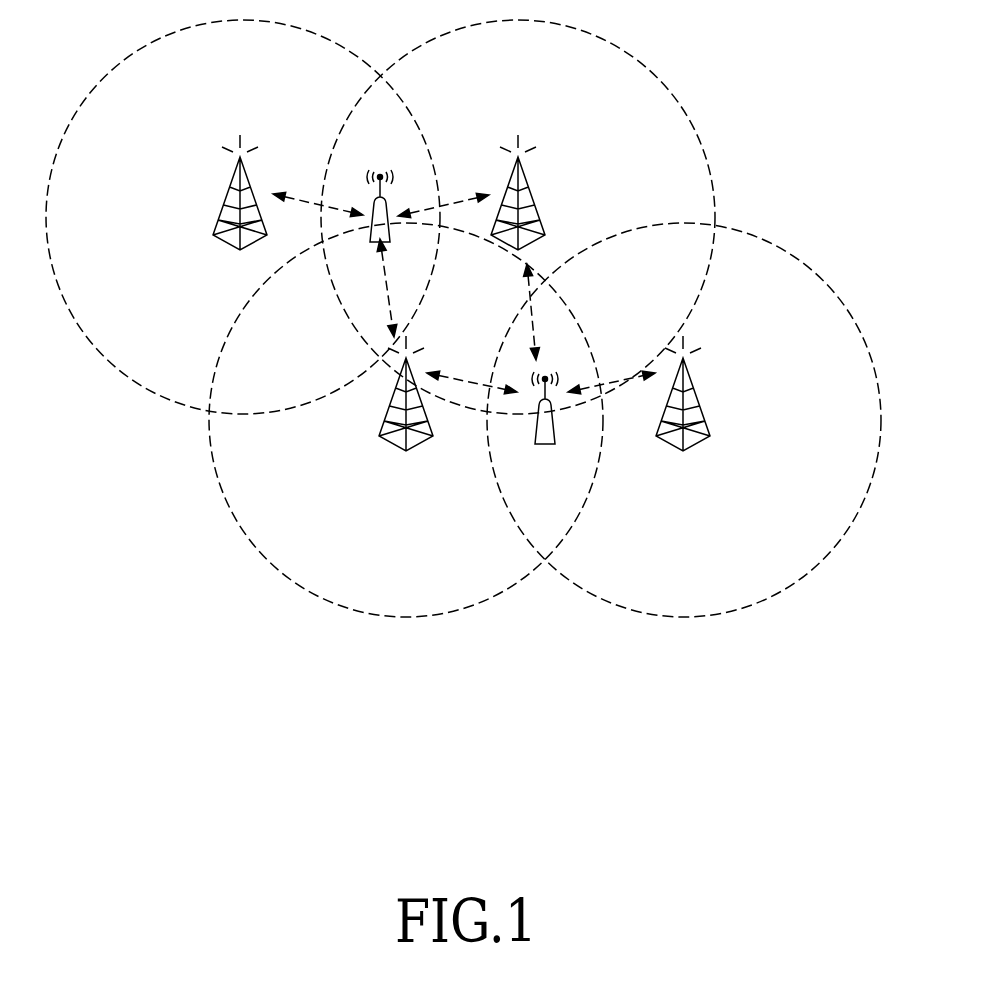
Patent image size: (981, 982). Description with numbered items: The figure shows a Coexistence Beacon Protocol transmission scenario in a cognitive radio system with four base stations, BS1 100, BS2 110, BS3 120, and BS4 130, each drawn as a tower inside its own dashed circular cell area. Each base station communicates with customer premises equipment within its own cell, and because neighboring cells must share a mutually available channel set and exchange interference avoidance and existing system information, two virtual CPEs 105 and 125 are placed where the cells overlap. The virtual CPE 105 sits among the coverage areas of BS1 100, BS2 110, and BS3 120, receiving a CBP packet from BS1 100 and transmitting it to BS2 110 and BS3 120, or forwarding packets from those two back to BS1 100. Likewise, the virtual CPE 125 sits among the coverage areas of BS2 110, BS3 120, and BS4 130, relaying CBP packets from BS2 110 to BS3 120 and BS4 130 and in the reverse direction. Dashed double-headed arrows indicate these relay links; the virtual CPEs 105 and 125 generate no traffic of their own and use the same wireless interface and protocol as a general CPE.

The base station 100 is at (243, 212).
The base station 110 is at (522, 212).
The base station 120 is at (411, 414).
The base station 130 is at (692, 414).
The virtual CPE 105 is at (380, 189).
The virtual CPE 125 is at (545, 432).